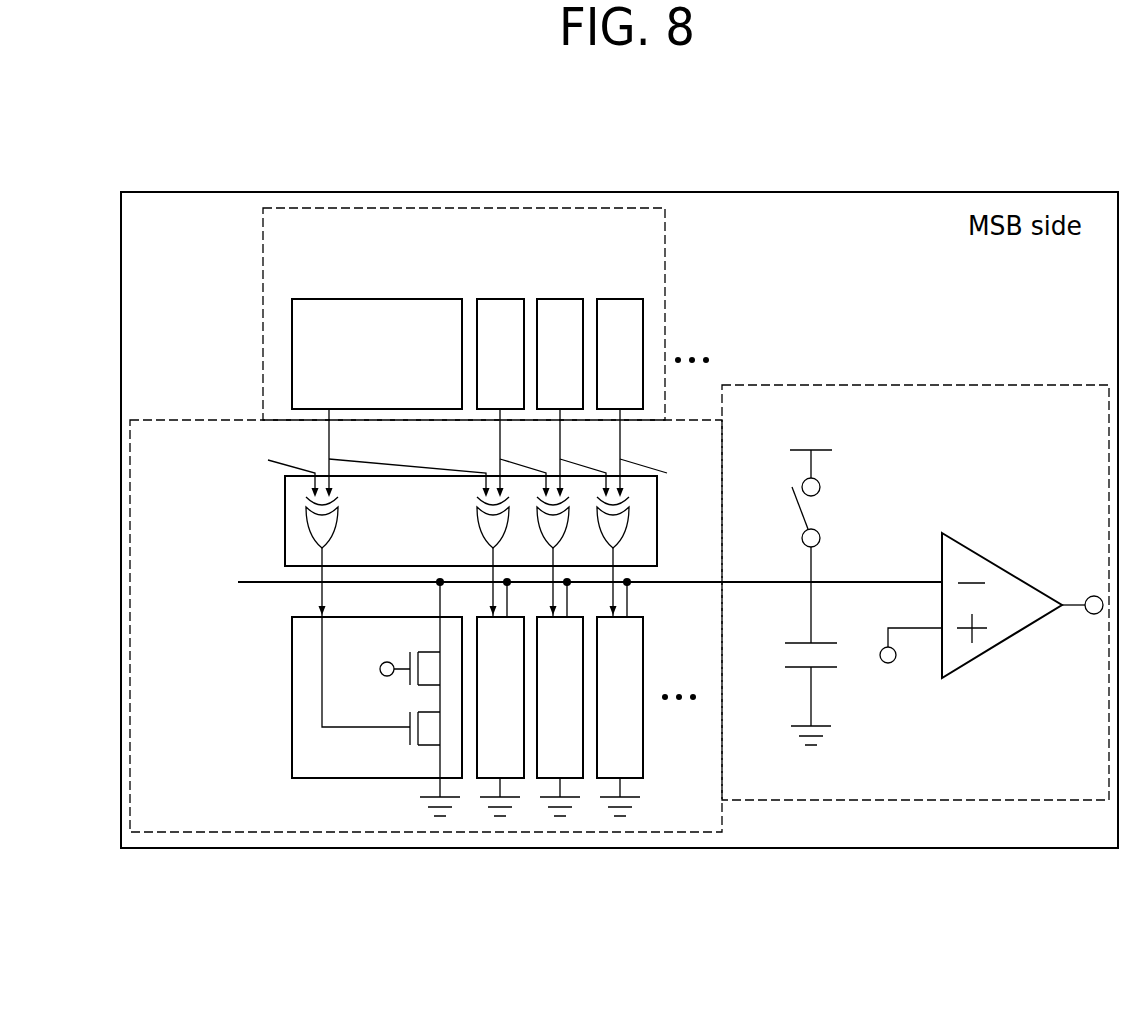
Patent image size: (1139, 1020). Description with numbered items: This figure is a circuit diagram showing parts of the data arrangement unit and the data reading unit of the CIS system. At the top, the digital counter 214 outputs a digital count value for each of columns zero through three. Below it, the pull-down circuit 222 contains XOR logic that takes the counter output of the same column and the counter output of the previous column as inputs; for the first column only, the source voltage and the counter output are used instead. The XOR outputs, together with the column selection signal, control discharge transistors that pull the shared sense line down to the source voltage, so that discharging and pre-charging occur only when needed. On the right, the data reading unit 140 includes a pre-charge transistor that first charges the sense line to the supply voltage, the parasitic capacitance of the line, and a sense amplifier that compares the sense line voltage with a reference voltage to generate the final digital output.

The digital counter 214 is at (263, 313).
The pull-down circuit 222 is at (425, 833).
The data reading unit 140 is at (912, 385).